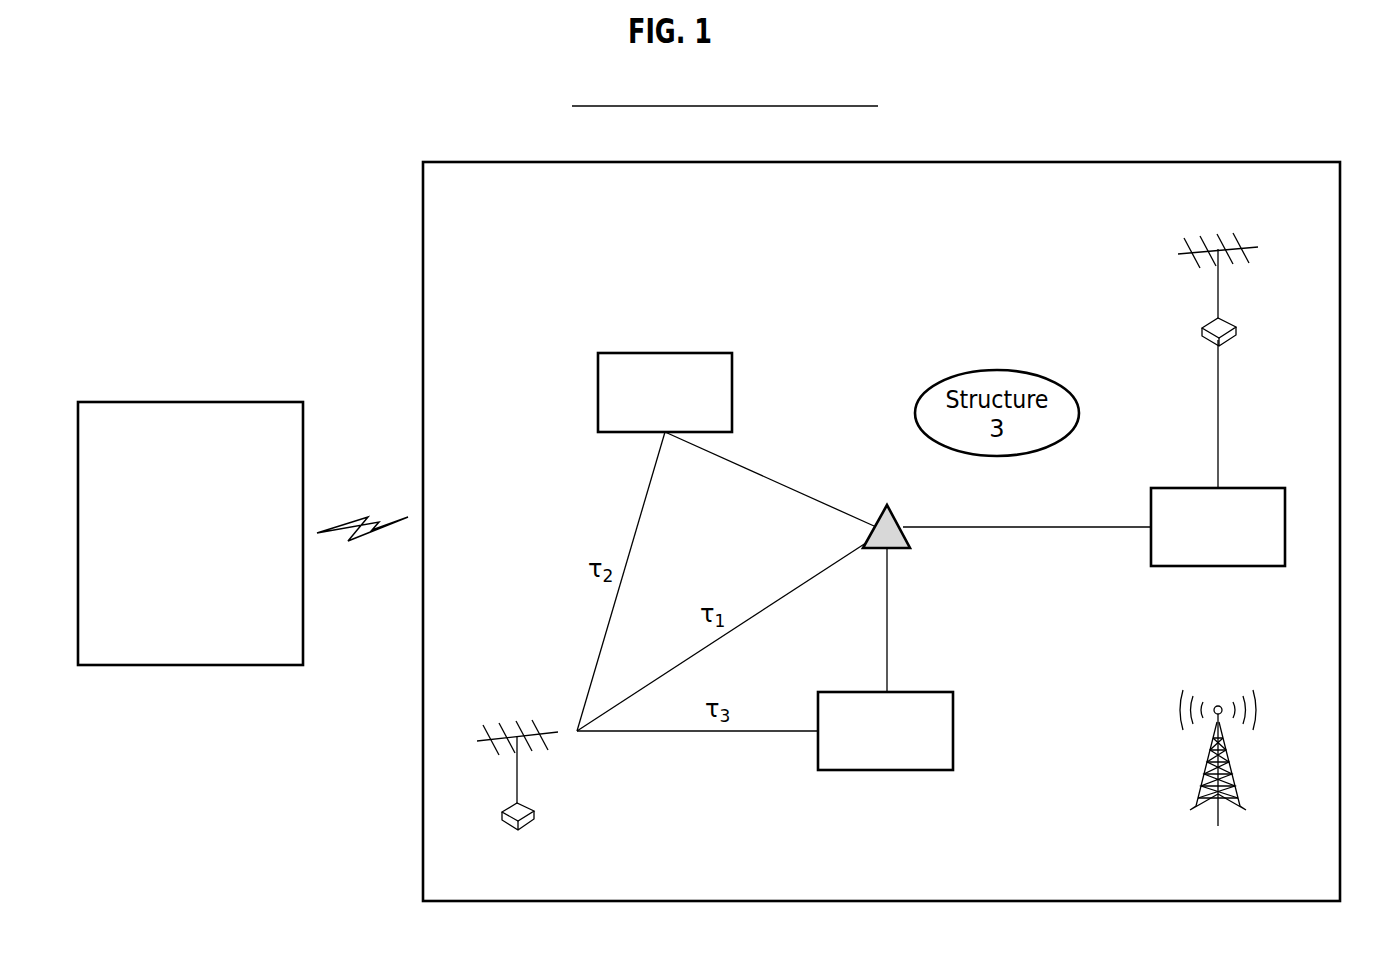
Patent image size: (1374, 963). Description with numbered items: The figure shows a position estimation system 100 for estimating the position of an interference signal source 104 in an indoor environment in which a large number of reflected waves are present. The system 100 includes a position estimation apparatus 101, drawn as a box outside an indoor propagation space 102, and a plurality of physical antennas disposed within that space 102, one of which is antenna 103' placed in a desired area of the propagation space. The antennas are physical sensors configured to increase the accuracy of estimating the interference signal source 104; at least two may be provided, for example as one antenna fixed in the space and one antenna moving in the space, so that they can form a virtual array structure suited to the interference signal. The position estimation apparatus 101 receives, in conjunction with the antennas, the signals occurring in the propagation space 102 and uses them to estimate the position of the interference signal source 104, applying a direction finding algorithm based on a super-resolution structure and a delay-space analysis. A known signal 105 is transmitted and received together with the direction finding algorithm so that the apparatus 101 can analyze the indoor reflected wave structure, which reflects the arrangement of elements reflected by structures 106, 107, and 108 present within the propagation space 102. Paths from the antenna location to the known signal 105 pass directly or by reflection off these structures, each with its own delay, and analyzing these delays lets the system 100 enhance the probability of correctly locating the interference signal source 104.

The position estimation system 100 is at (858, 78).
The position estimation apparatus 101 is at (193, 401).
The target space / environment 102 is at (876, 160).
The antenna 103' is at (1230, 265).
The interference signal source 104 is at (1230, 769).
The known signal 105 is at (889, 503).
The structure 106 is at (667, 352).
The structure 107 is at (905, 691).
The structure 108 is at (1238, 487).